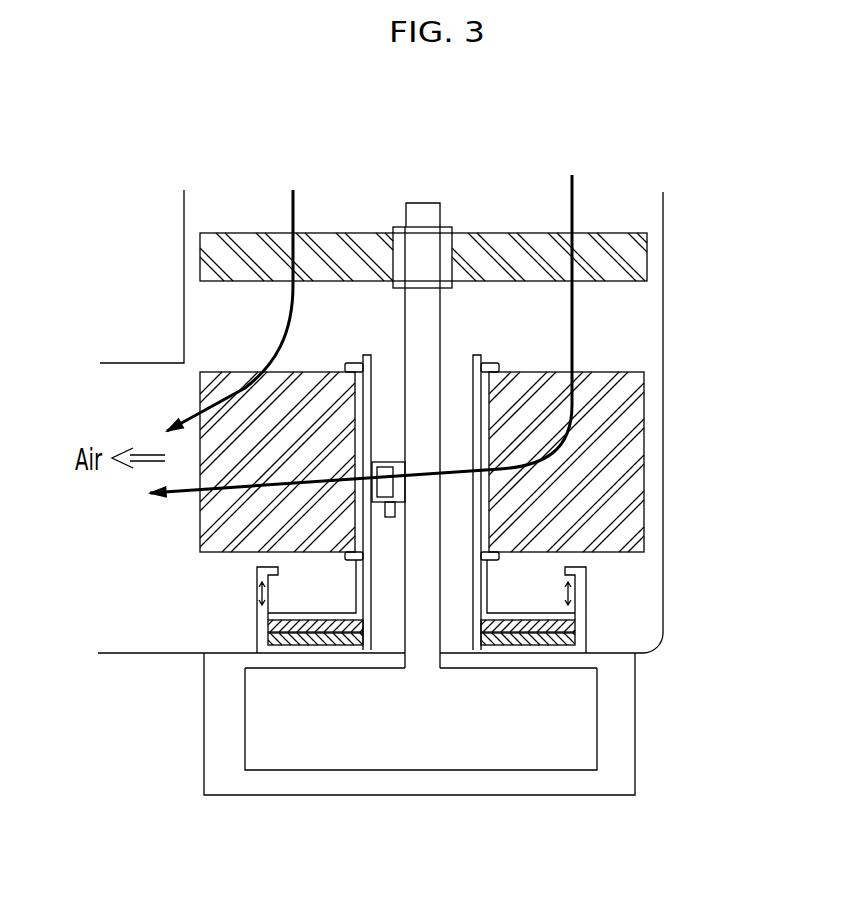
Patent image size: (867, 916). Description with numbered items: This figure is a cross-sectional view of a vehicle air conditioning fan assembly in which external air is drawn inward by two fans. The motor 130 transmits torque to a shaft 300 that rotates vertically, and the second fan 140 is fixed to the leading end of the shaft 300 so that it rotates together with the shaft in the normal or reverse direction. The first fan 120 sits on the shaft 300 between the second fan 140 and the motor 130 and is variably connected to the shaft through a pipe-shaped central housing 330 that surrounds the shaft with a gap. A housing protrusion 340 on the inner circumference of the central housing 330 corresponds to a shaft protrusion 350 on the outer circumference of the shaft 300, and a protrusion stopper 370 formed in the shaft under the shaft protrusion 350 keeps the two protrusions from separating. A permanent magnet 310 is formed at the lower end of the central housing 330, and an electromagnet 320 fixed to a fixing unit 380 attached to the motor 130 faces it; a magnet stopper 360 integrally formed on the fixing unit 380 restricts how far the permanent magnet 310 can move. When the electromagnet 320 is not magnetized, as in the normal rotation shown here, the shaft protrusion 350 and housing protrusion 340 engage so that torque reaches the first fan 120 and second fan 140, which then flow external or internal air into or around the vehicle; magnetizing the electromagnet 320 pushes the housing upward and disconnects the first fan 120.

The first fan 120 is at (578, 470).
The motor 130 is at (530, 740).
The second fan 140 is at (608, 260).
The shaft 300 is at (425, 325).
The permanent magnet 310 is at (545, 618).
The electromagnet 320 is at (562, 613).
The central housing 330 is at (490, 530).
The housing protrusion 340 is at (377, 468).
The shaft protrusion 350 is at (380, 490).
The magnet stopper 360 is at (586, 573).
The protrusion stopper 370 is at (394, 518).
The fixing unit 380 is at (498, 653).